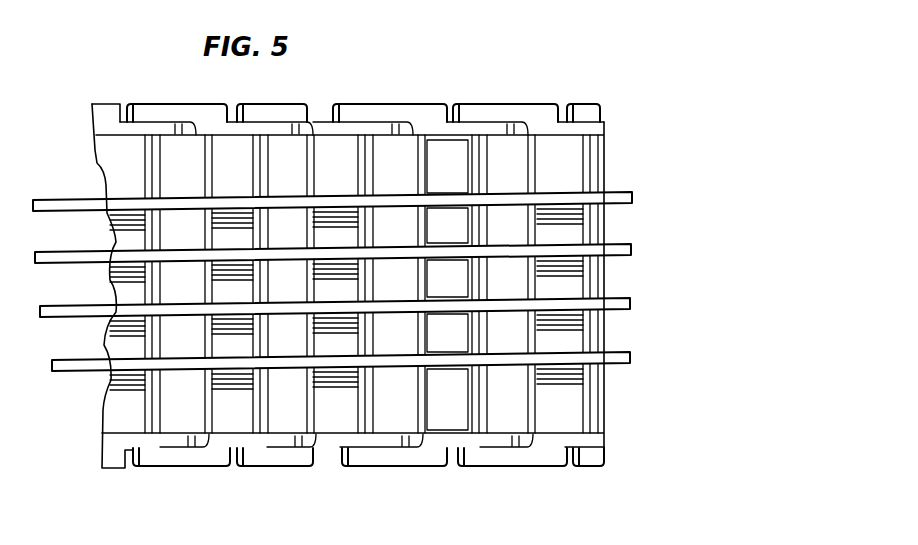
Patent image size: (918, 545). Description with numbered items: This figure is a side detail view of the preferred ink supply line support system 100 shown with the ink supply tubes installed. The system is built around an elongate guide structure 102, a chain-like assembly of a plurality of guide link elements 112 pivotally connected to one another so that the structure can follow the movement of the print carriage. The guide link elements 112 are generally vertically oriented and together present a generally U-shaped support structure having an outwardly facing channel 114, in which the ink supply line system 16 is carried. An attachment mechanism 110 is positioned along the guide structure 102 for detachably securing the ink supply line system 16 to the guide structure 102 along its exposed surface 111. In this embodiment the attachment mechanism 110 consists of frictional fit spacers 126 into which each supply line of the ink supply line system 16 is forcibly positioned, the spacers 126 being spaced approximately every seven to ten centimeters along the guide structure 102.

The ink supply line support system 100 is at (619, 439).
The ink supply line system 16 is at (630, 193).
The guide structure 102 is at (487, 163).
The attachment mechanism 110 is at (447, 437).
The exposed surface 111 is at (343, 417).
The guide link elements 112 is at (402, 100).
The outwardly facing channel 114 is at (597, 157).
The frictional fit spacer 126 is at (450, 352).